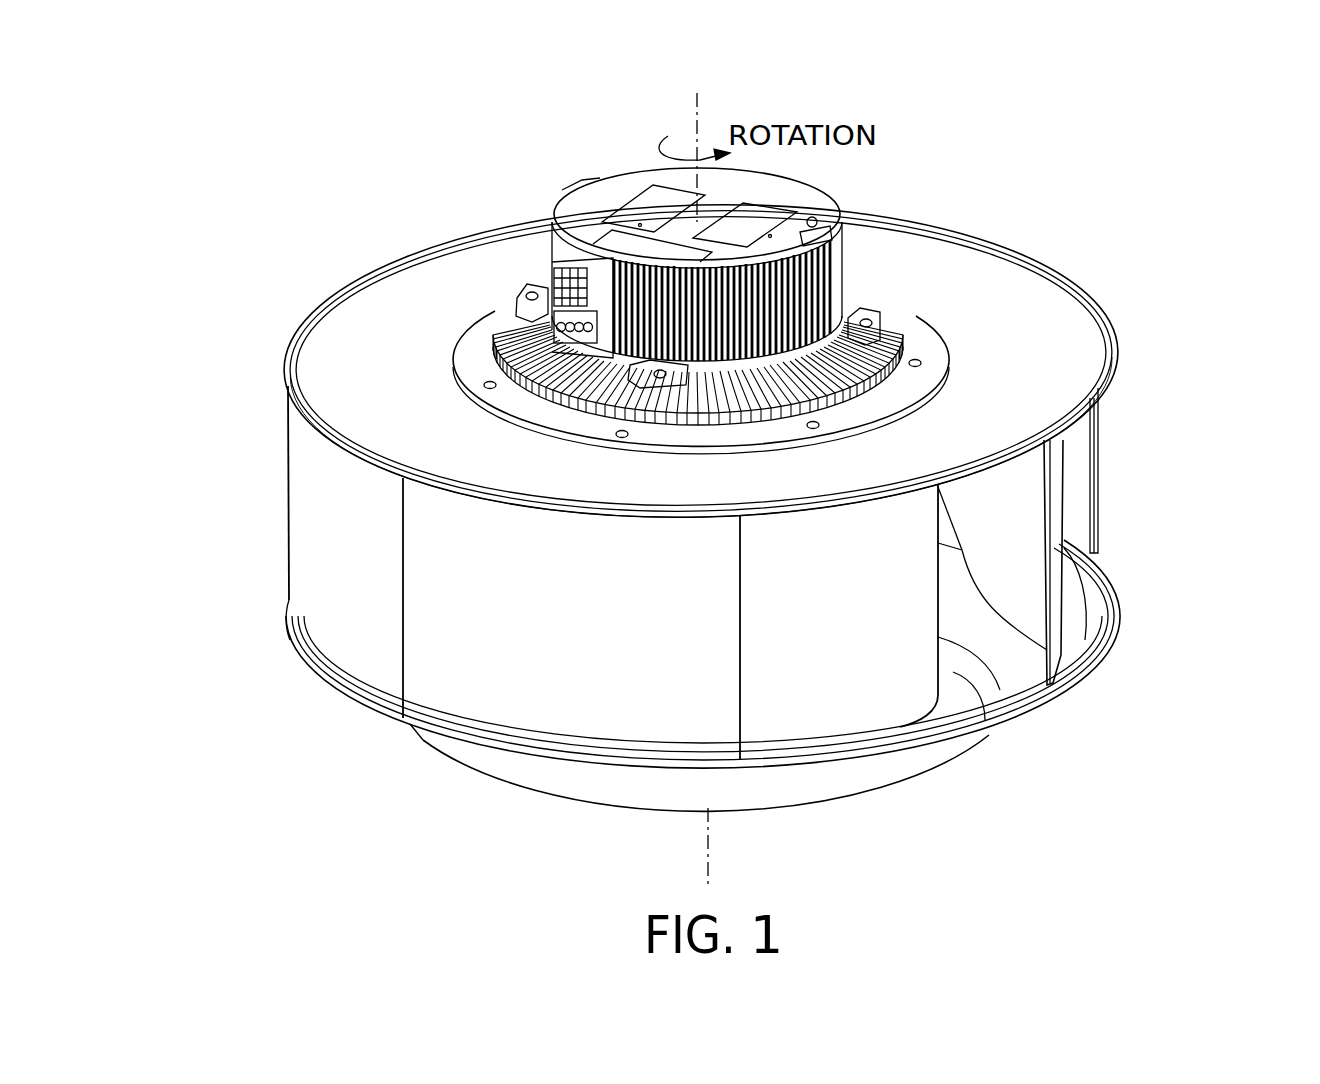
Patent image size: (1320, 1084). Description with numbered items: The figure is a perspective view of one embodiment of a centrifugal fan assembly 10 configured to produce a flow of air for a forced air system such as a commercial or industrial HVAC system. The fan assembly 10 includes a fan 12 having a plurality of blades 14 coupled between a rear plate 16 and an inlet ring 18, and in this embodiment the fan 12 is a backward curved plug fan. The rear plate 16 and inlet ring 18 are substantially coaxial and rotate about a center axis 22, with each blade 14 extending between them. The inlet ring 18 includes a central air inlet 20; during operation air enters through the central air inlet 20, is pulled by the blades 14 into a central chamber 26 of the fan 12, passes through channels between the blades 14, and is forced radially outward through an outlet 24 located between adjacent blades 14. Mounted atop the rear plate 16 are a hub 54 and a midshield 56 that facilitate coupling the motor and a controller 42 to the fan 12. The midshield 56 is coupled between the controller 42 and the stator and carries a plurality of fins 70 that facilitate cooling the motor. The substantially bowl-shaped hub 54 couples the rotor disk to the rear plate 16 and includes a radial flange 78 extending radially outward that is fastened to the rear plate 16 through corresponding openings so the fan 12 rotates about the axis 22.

The centrifugal fan assembly 10 is at (763, 313).
The fan 12 is at (260, 431).
The blades 14 is at (322, 498).
The rear plate 16 is at (1068, 333).
The inlet ring 18 is at (1082, 620).
The central air inlet 20 is at (608, 818).
The center axis 22 is at (700, 103).
The outlet 24 is at (1088, 577).
The central chamber 26 is at (953, 672).
The controller 42 is at (826, 213).
The hub 54 is at (455, 310).
The midshield 56 is at (872, 305).
The fins 70 is at (498, 318).
The radial flange 78 is at (466, 354).